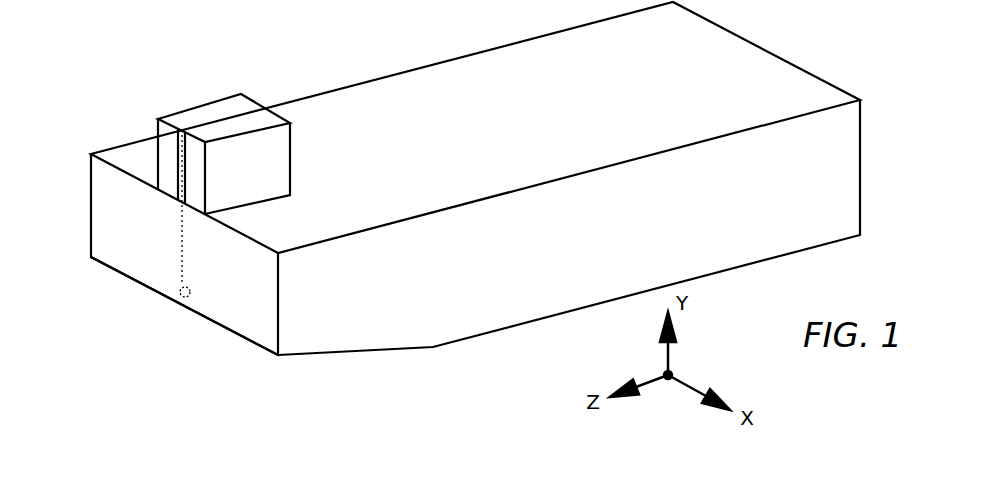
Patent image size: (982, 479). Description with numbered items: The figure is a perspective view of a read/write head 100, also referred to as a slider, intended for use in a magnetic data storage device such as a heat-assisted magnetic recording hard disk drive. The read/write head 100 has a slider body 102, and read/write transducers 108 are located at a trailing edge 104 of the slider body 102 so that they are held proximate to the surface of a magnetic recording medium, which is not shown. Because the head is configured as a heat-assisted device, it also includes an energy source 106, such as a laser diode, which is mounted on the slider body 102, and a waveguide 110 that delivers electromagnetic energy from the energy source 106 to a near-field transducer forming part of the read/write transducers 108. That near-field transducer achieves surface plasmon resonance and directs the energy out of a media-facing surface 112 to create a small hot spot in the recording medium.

The read/write head 100 is at (823, 40).
The slider body 102 is at (412, 80).
The trailing edge 104 is at (91, 232).
The energy source 106 is at (185, 117).
The read/write transducers 108 is at (180, 332).
The waveguide 110 is at (182, 248).
The media-facing surface 112 is at (265, 352).